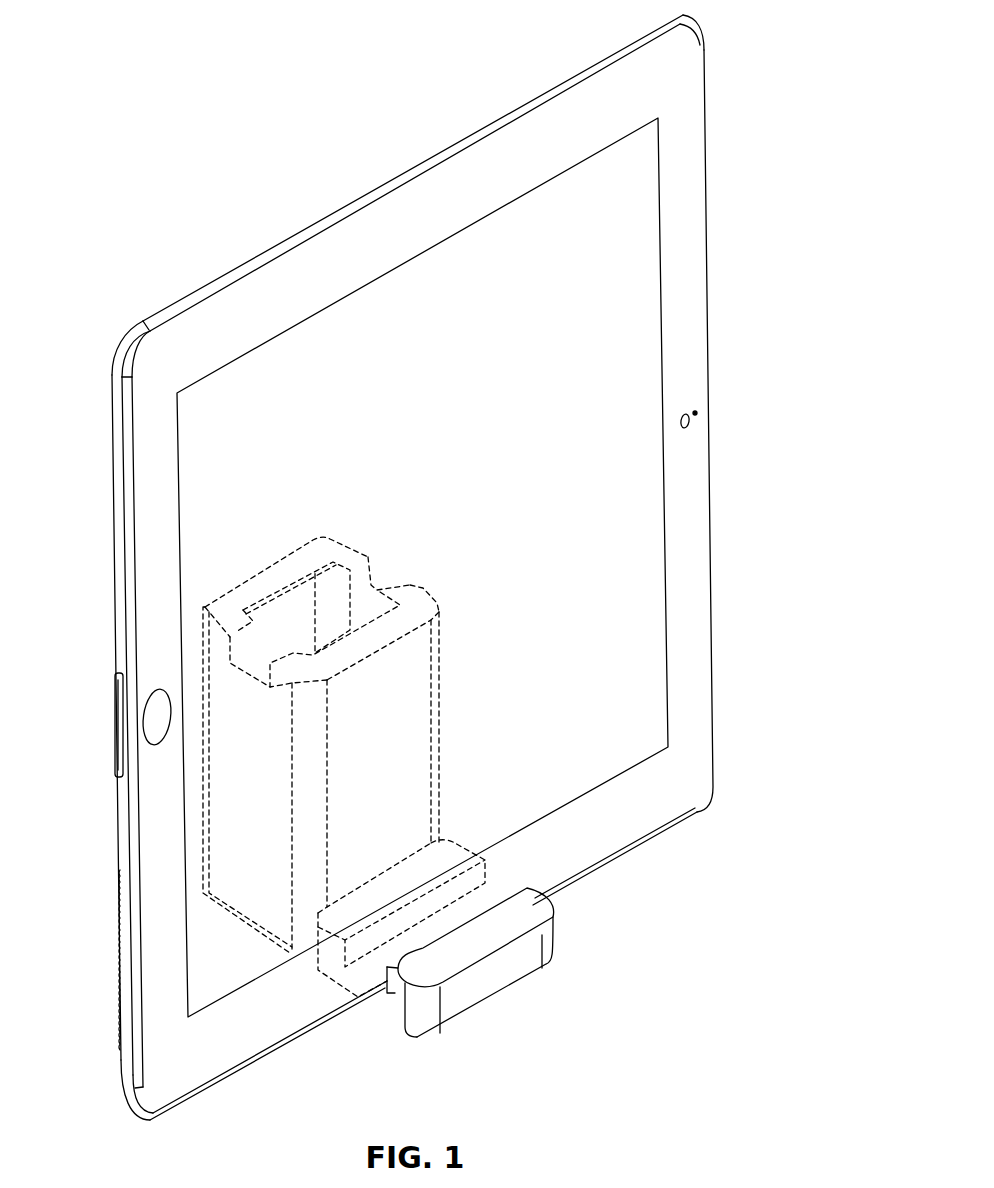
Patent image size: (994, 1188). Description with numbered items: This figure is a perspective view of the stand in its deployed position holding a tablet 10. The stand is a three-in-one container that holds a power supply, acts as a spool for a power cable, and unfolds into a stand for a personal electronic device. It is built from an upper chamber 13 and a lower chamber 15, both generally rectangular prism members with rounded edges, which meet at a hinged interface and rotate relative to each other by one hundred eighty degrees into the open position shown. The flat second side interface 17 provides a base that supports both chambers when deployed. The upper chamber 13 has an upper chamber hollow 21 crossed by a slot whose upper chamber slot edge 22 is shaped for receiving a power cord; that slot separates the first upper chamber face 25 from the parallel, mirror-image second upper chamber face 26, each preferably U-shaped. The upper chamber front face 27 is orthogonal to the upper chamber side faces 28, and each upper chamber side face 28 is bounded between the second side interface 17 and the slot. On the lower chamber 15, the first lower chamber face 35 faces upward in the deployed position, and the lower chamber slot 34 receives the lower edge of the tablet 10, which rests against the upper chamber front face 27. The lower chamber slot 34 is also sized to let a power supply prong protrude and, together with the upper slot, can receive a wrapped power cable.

The tablet 10 is at (704, 57).
The upper chamber 13 is at (413, 675).
The lower chamber 15 is at (490, 990).
The second side interface 17 is at (266, 937).
The upper chamber hollow 21 is at (273, 617).
The upper chamber slot edge 22 is at (380, 592).
The first upper chamber face 25 is at (248, 588).
The second upper chamber face 26 is at (430, 598).
The upper chamber front face 27 is at (390, 785).
The upper chamber side face 28 is at (246, 878).
The lower chamber slot 34 is at (493, 892).
The first lower chamber face 35 is at (520, 925).